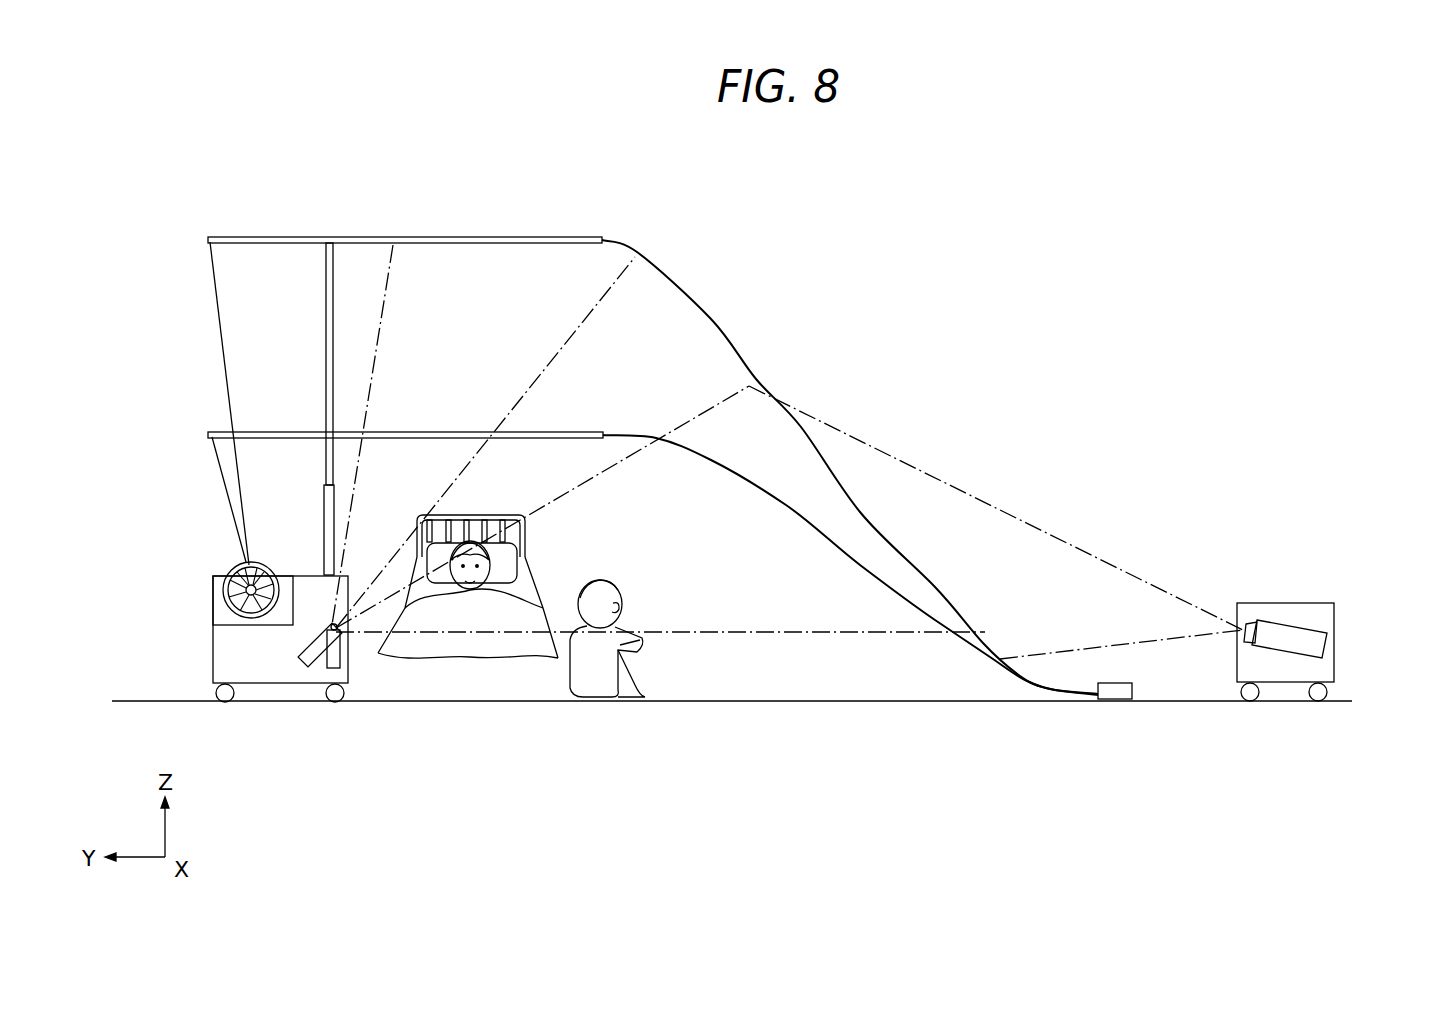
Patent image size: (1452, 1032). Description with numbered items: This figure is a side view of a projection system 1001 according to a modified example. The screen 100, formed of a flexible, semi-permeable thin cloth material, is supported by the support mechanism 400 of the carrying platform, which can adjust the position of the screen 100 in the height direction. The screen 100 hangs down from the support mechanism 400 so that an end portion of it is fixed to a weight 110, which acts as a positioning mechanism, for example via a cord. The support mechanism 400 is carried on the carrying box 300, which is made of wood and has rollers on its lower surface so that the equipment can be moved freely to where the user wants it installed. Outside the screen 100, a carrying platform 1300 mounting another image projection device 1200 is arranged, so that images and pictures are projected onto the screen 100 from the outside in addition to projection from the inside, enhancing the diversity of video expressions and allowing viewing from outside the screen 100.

The screen 100 is at (711, 319).
The weight 110 is at (1118, 700).
The carrying box 300 is at (213, 646).
The support mechanism 400 is at (153, 229).
The projection system 1001 is at (1072, 193).
The image projection device 1200 is at (1318, 644).
The carrying platform 1300 is at (1290, 603).